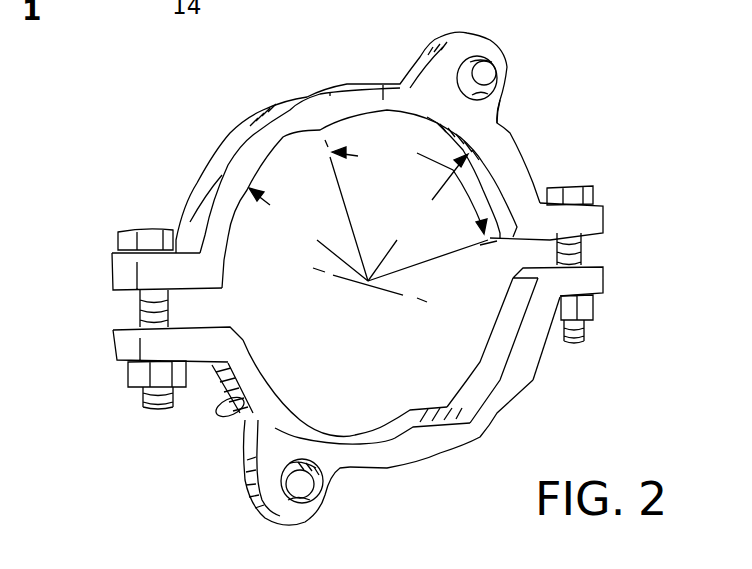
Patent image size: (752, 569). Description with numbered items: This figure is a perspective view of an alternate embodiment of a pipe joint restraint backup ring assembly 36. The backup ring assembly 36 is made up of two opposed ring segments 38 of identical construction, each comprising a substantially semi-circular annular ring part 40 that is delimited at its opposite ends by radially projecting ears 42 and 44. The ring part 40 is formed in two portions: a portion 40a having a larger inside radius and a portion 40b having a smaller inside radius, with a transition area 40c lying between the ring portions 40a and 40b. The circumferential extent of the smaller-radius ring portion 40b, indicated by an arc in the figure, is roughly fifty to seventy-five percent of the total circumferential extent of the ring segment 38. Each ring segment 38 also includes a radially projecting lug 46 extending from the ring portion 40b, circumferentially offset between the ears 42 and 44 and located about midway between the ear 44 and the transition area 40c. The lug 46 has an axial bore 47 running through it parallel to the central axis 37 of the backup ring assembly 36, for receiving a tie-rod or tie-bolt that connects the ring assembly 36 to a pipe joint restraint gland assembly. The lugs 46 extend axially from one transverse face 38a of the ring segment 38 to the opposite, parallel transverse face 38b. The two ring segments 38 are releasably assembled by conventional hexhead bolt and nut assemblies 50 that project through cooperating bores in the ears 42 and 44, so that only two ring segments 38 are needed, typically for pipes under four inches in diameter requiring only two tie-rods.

The backup ring assembly 36 is at (533, 161).
The central axis 37 is at (368, 283).
The ring segment 38 is at (364, 86).
The transverse face 38a is at (510, 390).
The opposite transverse face 38b is at (236, 413).
The annular ring part 40 is at (273, 127).
The ring portion of larger inside radius 40a is at (248, 160).
The ring portion of smaller inside radius 40b is at (385, 83).
The transition area 40c is at (307, 123).
The ear 42 is at (110, 270).
The ear 44 is at (113, 353).
The lug 46 is at (253, 497).
The axial bore 47 is at (497, 83).
The hexhead bolt and nut assembly 50 is at (131, 391).